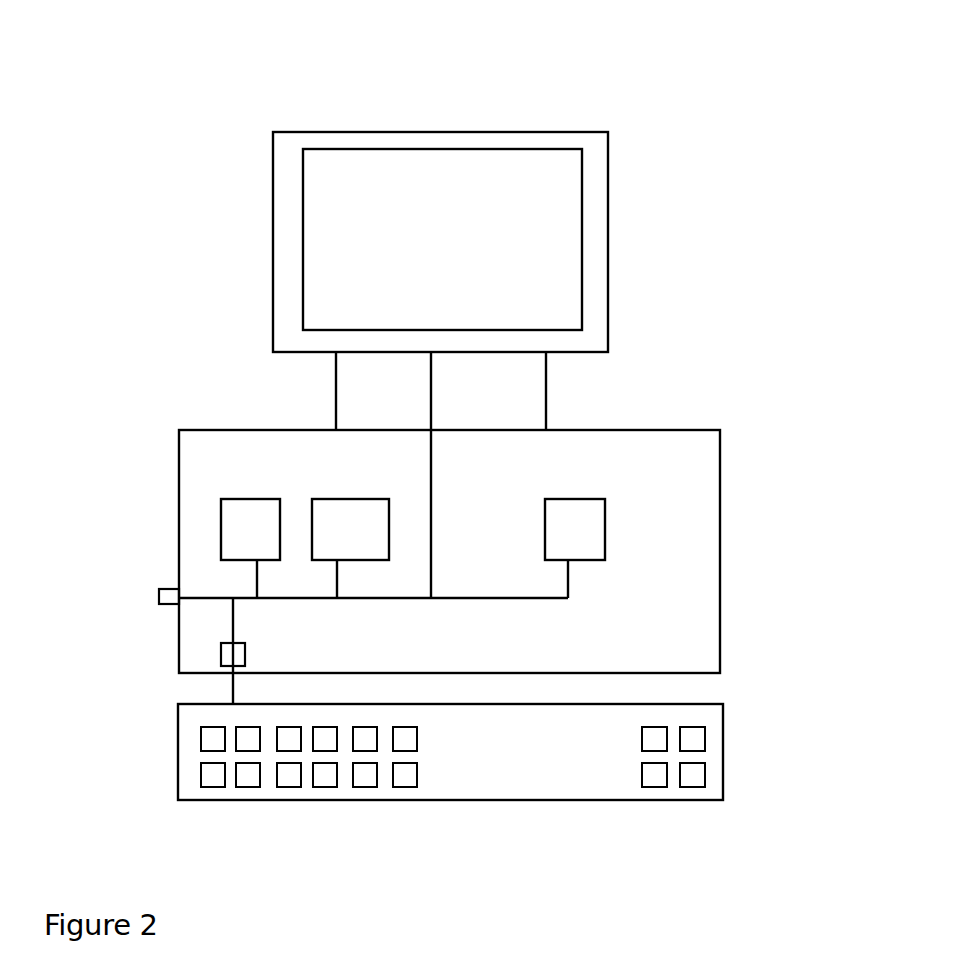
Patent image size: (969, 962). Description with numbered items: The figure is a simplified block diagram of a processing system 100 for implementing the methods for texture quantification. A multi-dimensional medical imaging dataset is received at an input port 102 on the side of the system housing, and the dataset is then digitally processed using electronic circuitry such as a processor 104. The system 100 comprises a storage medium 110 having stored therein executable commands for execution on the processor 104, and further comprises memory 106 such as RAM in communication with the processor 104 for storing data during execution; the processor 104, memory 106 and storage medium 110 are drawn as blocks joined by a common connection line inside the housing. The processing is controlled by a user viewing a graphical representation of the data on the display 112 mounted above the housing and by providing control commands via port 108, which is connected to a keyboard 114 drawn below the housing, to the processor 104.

The processing system 100 is at (587, 95).
The input port 102 is at (167, 589).
The processor 104 is at (221, 510).
The memory 106 is at (337, 498).
The port 108 is at (220, 655).
The storage medium 110 is at (595, 498).
The display 112 is at (403, 238).
The keyboard 114 is at (605, 741).